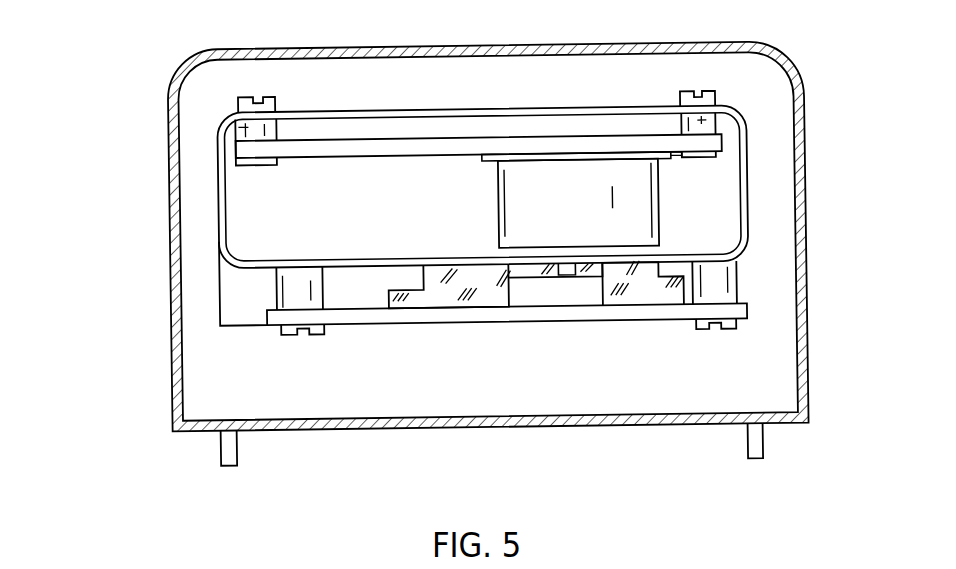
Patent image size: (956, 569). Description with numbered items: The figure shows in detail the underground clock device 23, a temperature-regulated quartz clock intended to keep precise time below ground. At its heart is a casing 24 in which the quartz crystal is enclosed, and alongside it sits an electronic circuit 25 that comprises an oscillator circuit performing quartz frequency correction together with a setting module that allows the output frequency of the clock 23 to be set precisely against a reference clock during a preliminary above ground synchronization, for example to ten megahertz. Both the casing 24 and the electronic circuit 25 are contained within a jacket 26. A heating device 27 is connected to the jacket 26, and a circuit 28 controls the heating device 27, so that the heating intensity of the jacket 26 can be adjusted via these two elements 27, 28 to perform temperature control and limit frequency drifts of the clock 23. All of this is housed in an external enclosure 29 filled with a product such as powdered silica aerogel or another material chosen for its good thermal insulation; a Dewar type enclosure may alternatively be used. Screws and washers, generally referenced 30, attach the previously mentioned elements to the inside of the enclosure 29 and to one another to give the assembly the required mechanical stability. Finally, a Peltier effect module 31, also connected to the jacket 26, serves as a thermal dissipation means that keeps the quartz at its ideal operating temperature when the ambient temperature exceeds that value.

The underground clock device 23 is at (157, 252).
The casing 24 is at (487, 210).
The electronic circuit 25 is at (388, 143).
The jacket 26 is at (232, 174).
The heating device 27 is at (433, 298).
The control circuit 28 is at (736, 310).
The external enclosure 29 is at (208, 380).
The screws and washers 30 is at (237, 126).
The Peltier effect module 31 is at (648, 297).